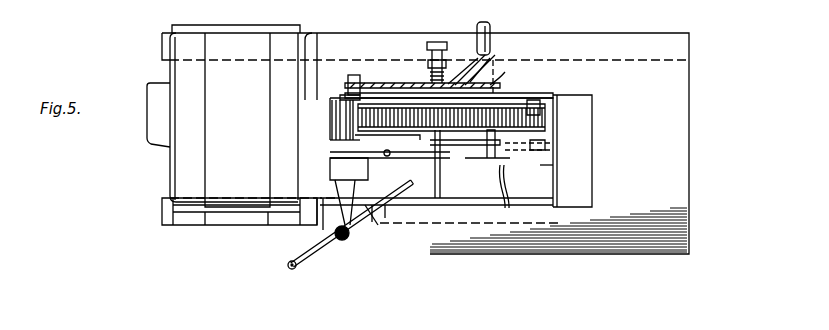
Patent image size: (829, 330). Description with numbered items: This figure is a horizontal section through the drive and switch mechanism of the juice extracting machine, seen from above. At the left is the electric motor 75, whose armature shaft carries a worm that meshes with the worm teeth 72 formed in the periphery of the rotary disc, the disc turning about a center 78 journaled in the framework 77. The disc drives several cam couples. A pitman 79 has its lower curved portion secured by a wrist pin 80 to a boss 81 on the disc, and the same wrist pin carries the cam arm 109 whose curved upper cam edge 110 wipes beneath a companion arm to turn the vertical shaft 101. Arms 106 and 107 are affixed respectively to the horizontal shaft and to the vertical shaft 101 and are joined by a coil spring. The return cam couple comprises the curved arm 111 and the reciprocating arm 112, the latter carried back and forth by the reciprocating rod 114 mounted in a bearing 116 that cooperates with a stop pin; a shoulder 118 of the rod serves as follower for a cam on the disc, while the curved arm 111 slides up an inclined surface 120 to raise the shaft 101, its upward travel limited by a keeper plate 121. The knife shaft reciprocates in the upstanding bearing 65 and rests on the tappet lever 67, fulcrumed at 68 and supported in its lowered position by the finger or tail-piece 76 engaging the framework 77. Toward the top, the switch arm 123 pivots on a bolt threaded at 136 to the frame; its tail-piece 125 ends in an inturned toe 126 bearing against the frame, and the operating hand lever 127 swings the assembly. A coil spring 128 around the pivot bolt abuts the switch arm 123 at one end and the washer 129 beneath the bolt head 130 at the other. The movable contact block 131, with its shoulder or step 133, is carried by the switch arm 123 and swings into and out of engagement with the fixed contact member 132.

The boss or bearing 65 is at (470, 160).
The tappet lever 67 is at (438, 200).
The fulcrum 68 is at (355, 140).
The worm teeth 72 is at (557, 116).
The electric motor 75 is at (172, 158).
The finger or tail-piece 76 is at (332, 120).
The framework 77 is at (332, 140).
The center 78 is at (438, 131).
The pitman 79 is at (340, 158).
The wrist pin 80 is at (547, 145).
The boss 81 is at (546, 112).
The vertical shaft 101 is at (339, 240).
The arm 106 is at (372, 228).
The arm 107 is at (306, 268).
The cam arm 109 is at (548, 190).
The curved upper cam edge 110 is at (548, 200).
The curved arm 111 is at (335, 190).
The reciprocating arm 112 is at (345, 192).
The reciprocating rod 114 is at (553, 155).
The bearing 116 is at (548, 168).
The shoulder 118 is at (407, 183).
The inclined surface 120 is at (380, 223).
The keeper plate 121 is at (392, 215).
The switch arm 123 is at (385, 83).
The tail-piece 125 is at (478, 80).
The inturned toe 126 is at (500, 82).
The operating hand lever 127 is at (486, 22).
The coil spring 128 is at (425, 90).
The washer 129 is at (468, 55).
The bolt head 130 is at (437, 42).
The movable contact block 131 is at (360, 82).
The fixed contact member 132 is at (355, 75).
The shoulder or step 133 is at (492, 58).
The threaded connection 136 is at (455, 80).